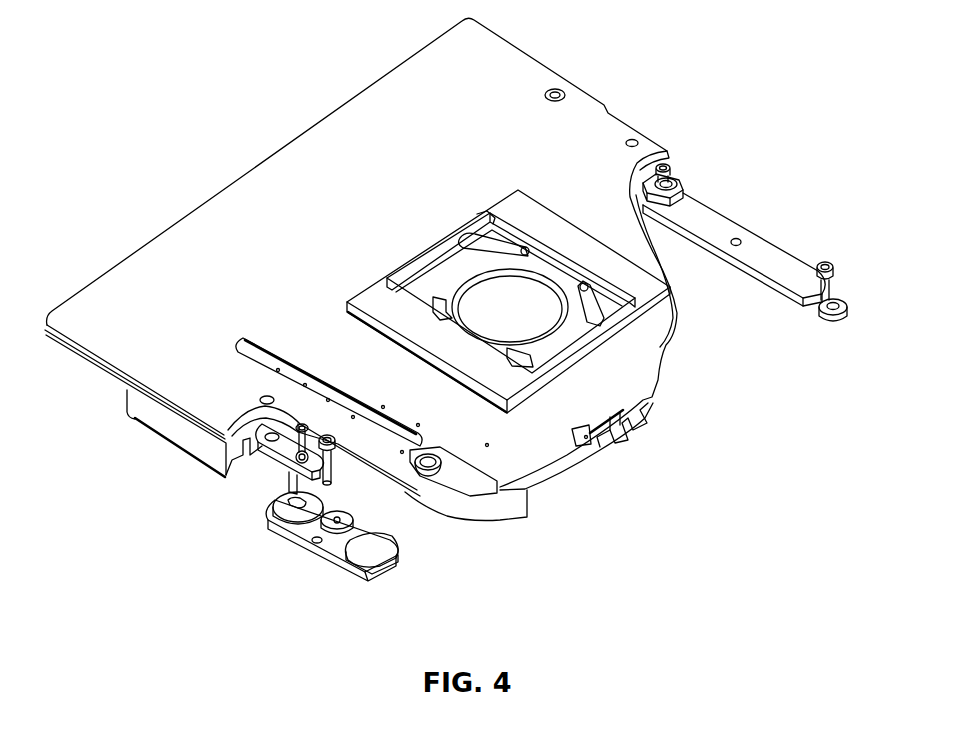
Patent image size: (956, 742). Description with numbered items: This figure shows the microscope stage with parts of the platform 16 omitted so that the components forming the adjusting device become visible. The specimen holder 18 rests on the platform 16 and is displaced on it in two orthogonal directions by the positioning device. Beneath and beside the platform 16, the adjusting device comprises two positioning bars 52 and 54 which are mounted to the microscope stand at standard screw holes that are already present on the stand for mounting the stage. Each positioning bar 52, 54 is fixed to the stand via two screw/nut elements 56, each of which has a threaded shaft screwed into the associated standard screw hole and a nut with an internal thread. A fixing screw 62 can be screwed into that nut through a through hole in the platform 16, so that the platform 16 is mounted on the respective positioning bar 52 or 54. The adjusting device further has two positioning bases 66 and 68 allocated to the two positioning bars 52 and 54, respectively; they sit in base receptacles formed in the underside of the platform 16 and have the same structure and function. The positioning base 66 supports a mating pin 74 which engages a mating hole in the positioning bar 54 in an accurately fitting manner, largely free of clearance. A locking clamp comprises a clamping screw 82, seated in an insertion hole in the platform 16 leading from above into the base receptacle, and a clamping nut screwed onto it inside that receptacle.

The platform 16 is at (263, 178).
The specimen holder 18 is at (512, 200).
The positioning bar 52 is at (313, 555).
The positioning bar 54 is at (720, 226).
The screw/nut element 56 is at (832, 325).
The fixing screw 62 is at (828, 263).
The positioning base 66 is at (276, 462).
The positioning base 68 is at (680, 180).
The mating pin 74 is at (282, 492).
The clamping screw 82 is at (278, 419).